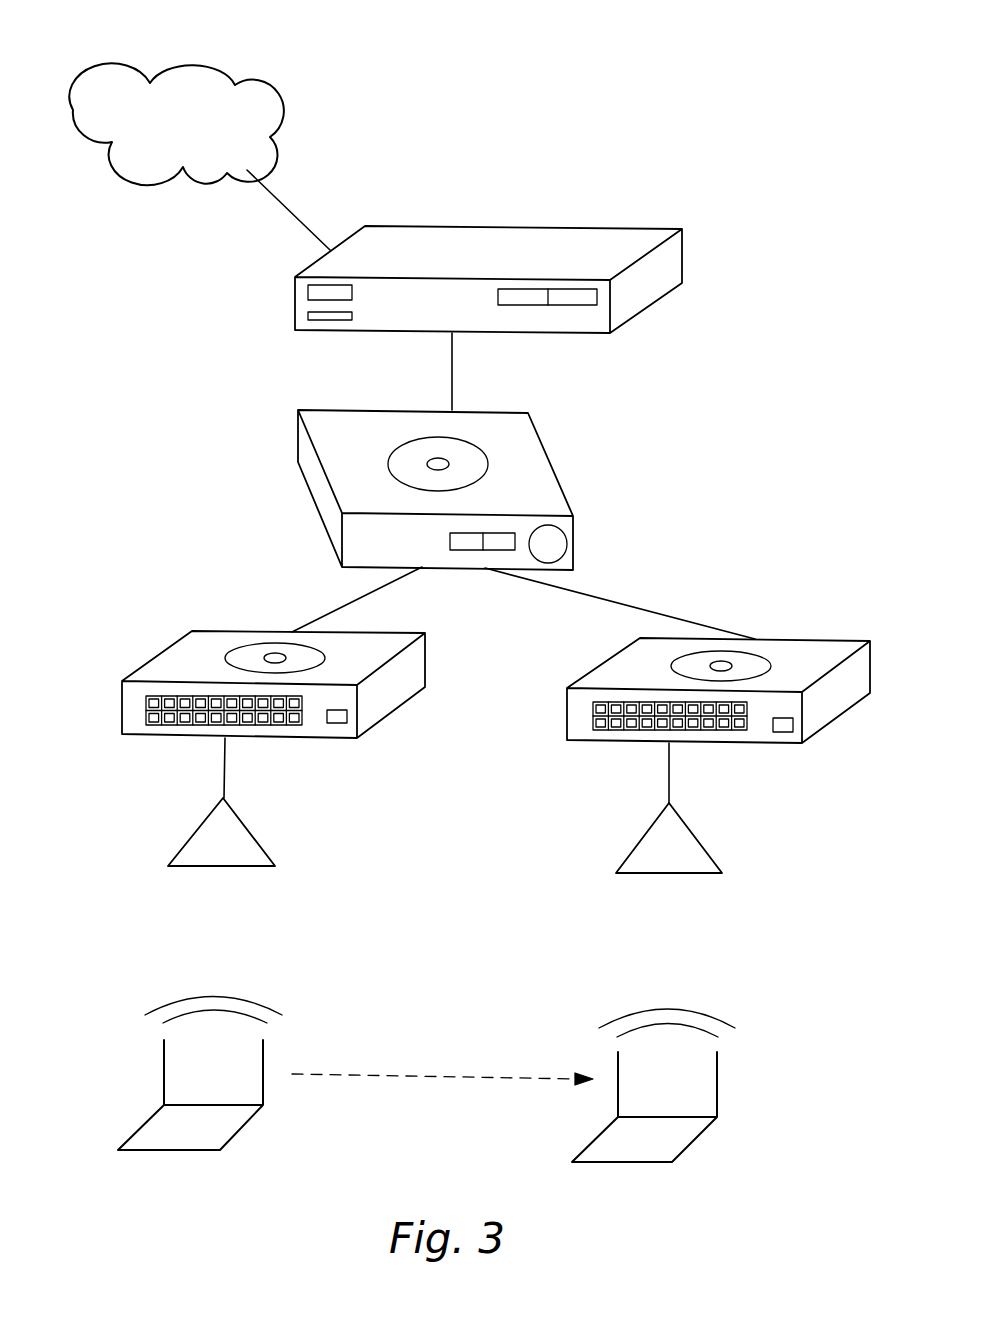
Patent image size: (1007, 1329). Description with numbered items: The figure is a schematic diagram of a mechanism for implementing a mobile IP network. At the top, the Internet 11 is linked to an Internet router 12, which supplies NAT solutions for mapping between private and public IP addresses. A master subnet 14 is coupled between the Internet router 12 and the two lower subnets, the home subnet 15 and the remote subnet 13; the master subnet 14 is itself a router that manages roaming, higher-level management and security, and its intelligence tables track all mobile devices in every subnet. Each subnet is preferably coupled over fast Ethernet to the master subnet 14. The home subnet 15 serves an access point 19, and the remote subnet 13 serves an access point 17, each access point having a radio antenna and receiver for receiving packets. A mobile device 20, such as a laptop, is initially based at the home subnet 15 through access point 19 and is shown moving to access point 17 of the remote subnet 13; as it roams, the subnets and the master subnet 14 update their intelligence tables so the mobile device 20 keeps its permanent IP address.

The Internet 11 is at (123, 78).
The Internet router 12 is at (693, 220).
The master subnet 14 is at (564, 452).
The home subnet 15 is at (148, 662).
The remote subnet 13 is at (818, 640).
The access point 19 is at (220, 876).
The access point 17 is at (665, 881).
The mobile device 20 is at (179, 1168).